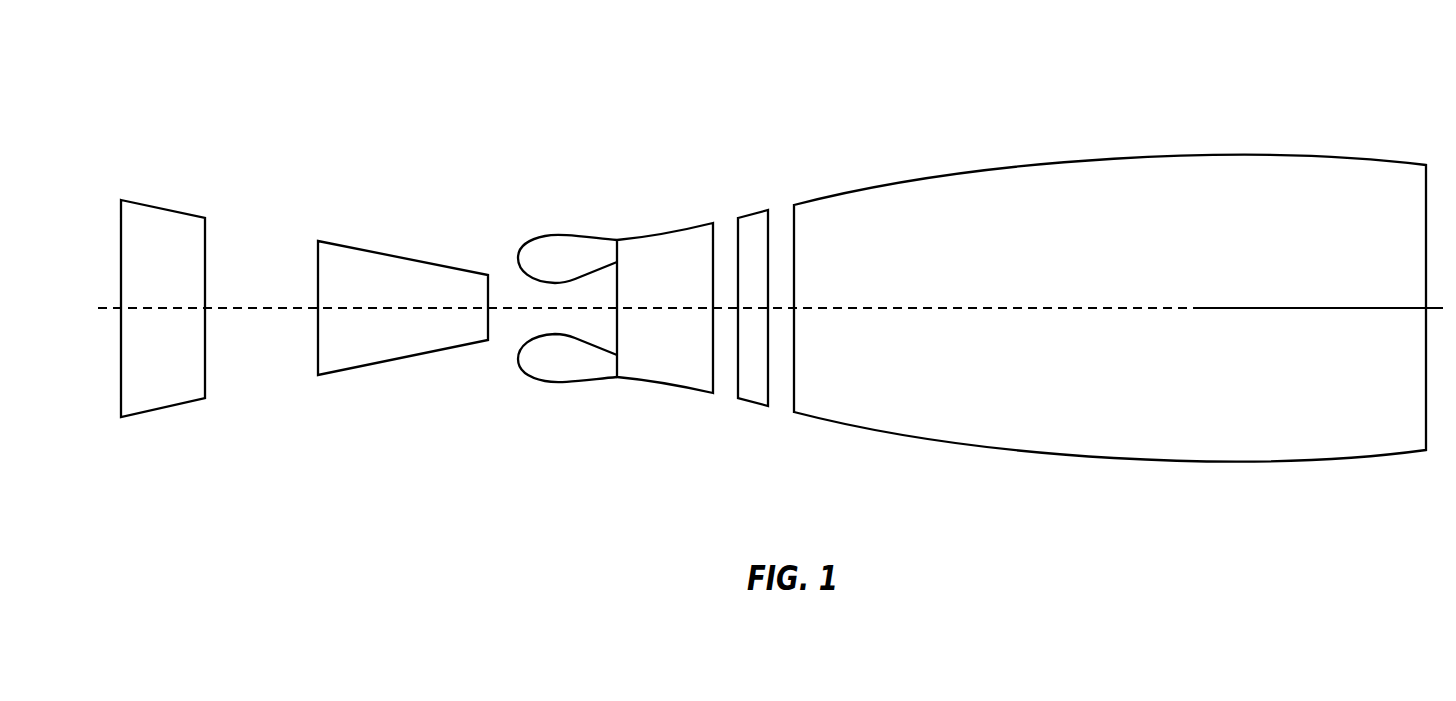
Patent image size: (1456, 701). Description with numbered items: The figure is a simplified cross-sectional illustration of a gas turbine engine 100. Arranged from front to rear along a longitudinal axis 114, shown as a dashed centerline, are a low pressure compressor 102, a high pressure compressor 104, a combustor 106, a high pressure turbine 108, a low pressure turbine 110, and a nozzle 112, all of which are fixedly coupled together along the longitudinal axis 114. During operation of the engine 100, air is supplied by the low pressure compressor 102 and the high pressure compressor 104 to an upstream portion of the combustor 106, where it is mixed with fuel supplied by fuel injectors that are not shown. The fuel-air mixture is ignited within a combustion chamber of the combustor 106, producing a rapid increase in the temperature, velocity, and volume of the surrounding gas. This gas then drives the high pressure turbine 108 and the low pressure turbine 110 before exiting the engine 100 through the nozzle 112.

The gas turbine engine 100 is at (1050, 62).
The low pressure compressor 102 is at (163, 415).
The high pressure compressor 104 is at (387, 362).
The combustor 106 is at (545, 380).
The high pressure turbine 108 is at (663, 387).
The low pressure turbine 110 is at (752, 403).
The nozzle 112 is at (1053, 453).
The longitudinal axis 114 is at (1318, 310).